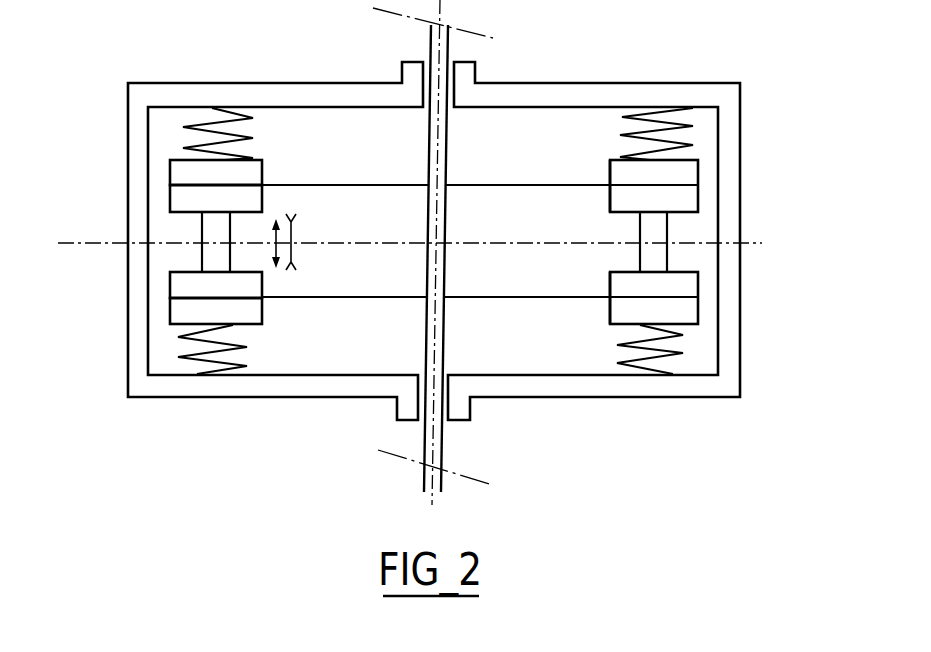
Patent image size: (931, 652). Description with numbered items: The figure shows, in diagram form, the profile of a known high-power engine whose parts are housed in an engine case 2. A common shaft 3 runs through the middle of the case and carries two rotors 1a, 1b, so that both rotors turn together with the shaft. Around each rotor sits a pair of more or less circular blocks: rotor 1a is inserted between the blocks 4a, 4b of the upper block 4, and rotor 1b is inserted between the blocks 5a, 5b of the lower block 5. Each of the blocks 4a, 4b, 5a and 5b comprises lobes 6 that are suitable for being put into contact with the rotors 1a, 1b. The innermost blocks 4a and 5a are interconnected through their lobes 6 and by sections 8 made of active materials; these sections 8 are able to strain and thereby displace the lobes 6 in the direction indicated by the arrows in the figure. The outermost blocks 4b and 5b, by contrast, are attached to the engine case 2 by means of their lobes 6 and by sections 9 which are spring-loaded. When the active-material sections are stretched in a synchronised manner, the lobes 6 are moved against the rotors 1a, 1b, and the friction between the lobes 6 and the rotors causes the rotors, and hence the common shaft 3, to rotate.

The rotor 1a is at (485, 185).
The rotor 1b is at (485, 297).
The engine case 2 is at (122, 342).
The common shaft 3 is at (448, 135).
The block 4 is at (705, 173).
The innermost block 4a is at (262, 197).
The outermost block 4b is at (262, 170).
The block 5 is at (705, 310).
The innermost block 5a is at (262, 280).
The outermost block 5b is at (262, 310).
The lobe 6 is at (610, 170).
The section made of active material 8 is at (202, 252).
The spring-loaded section 9 is at (200, 117).